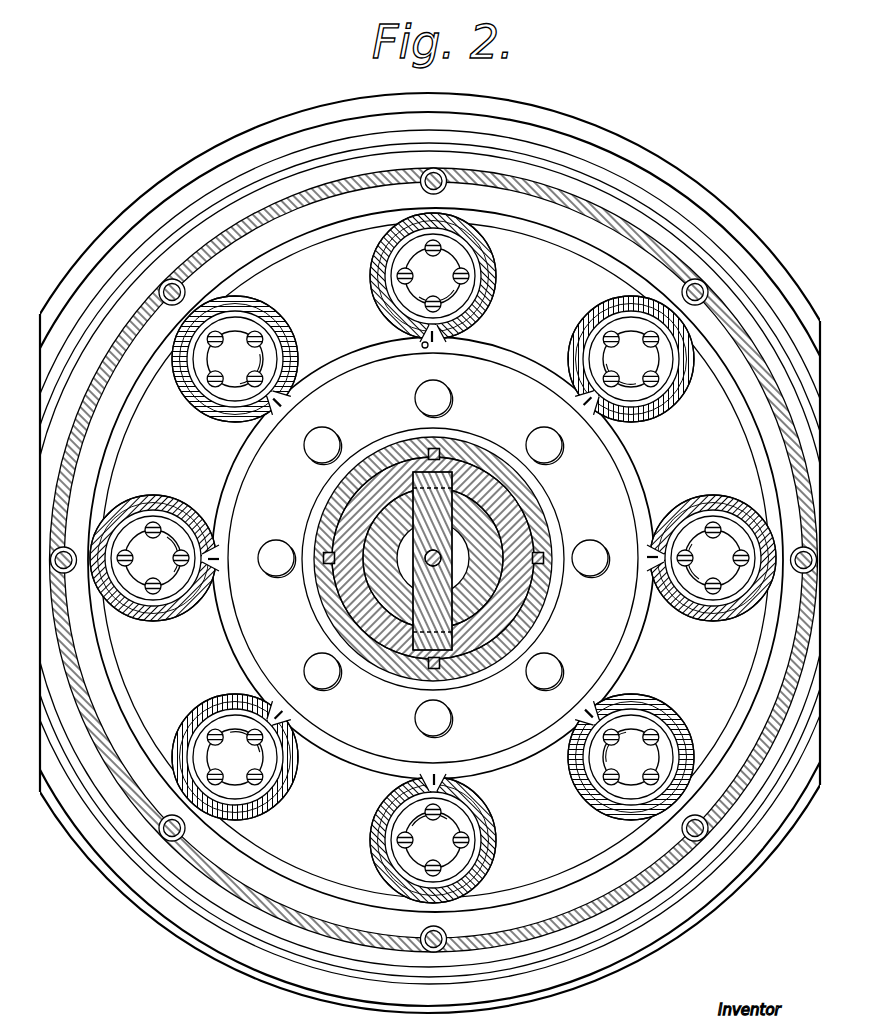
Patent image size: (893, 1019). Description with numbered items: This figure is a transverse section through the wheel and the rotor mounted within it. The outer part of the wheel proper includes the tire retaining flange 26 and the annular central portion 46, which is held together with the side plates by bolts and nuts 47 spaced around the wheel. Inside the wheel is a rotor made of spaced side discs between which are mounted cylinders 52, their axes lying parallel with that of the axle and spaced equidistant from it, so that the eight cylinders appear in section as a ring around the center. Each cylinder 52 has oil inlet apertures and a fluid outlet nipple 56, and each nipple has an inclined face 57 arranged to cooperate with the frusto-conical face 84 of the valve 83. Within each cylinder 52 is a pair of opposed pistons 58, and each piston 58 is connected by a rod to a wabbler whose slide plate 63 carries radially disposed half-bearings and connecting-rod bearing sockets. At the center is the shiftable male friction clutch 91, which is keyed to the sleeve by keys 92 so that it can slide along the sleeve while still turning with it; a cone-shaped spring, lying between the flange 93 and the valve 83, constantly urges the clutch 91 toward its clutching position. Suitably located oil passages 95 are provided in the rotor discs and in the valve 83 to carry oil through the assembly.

The tire retaining flange 26 is at (662, 186).
The central portion 46 is at (688, 260).
The bolts and nuts 47 is at (446, 184).
The cylinder 52 is at (494, 250).
The fluid outlet nipple 56 is at (437, 342).
The inclined face 57 is at (425, 347).
The piston 58 is at (468, 293).
The slide plate 63 is at (722, 452).
The valve 83 is at (510, 383).
The frusto-conical face 84 is at (340, 357).
The male friction clutch 91 is at (527, 501).
The key 92 is at (542, 553).
The flange 93 is at (488, 443).
The oil passage 95 is at (415, 398).